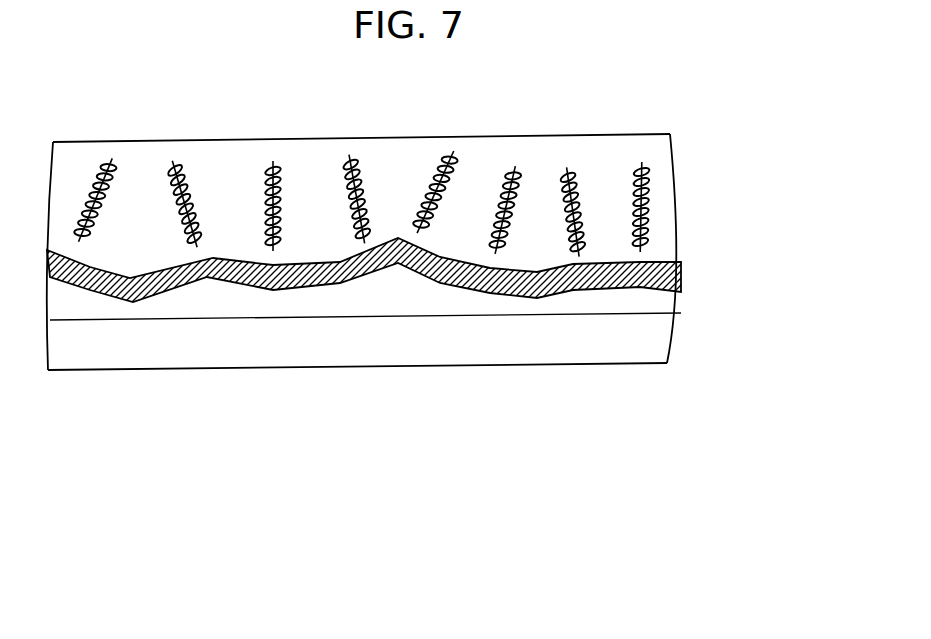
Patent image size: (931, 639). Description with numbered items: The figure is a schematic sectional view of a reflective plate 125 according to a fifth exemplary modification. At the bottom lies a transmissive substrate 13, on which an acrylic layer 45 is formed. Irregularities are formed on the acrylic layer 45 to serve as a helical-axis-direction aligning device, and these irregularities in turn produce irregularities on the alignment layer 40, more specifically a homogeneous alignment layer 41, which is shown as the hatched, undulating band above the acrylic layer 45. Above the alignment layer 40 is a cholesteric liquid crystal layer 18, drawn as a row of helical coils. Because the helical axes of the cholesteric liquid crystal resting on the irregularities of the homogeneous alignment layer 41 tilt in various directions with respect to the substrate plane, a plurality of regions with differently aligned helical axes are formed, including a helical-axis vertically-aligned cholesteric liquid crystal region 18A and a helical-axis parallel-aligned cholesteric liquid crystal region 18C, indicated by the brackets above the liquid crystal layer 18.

The reflective plate 125 is at (663, 110).
The cholesteric liquid crystal layer 18 is at (428, 167).
The helical-axis vertically-aligned cholesteric liquid crystal region 18A is at (350, 122).
The helical-axis parallel-aligned cholesteric liquid crystal region 18C is at (538, 122).
The alignment layer 40 is at (695, 277).
The homogeneous alignment layer 41 is at (332, 283).
The acrylic layer 45 is at (672, 305).
The transmissive substrate 13 is at (655, 343).